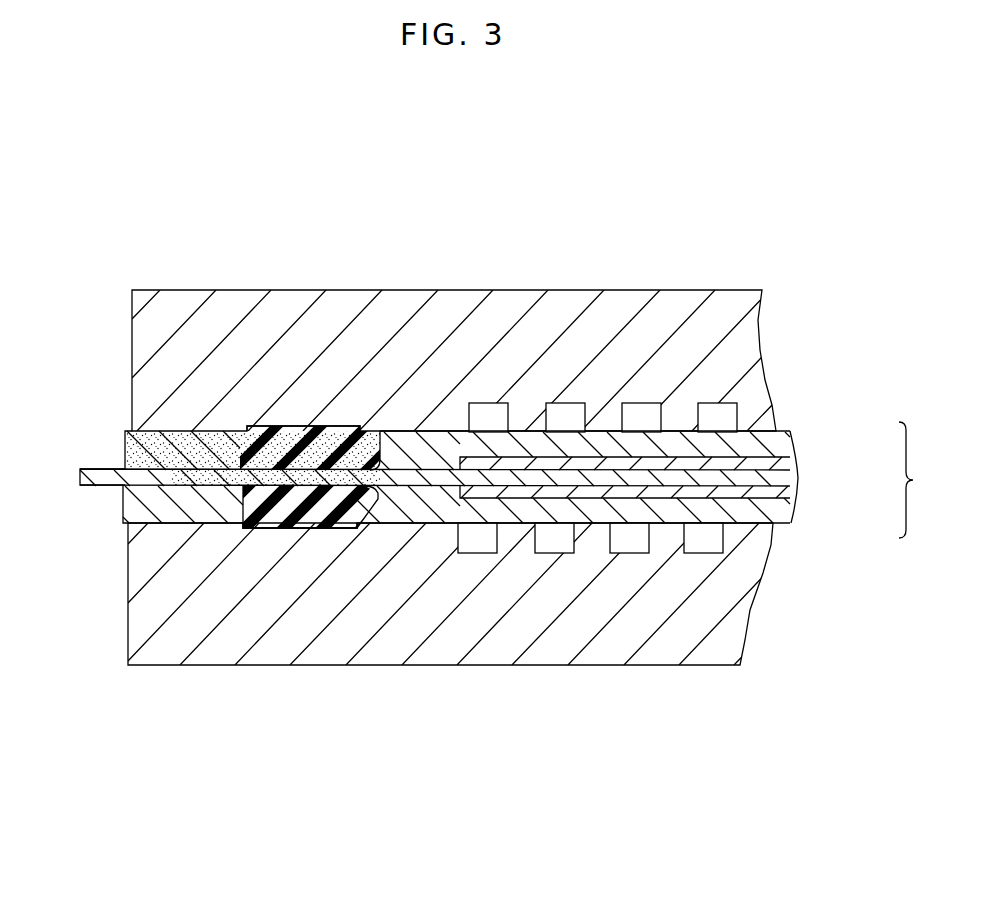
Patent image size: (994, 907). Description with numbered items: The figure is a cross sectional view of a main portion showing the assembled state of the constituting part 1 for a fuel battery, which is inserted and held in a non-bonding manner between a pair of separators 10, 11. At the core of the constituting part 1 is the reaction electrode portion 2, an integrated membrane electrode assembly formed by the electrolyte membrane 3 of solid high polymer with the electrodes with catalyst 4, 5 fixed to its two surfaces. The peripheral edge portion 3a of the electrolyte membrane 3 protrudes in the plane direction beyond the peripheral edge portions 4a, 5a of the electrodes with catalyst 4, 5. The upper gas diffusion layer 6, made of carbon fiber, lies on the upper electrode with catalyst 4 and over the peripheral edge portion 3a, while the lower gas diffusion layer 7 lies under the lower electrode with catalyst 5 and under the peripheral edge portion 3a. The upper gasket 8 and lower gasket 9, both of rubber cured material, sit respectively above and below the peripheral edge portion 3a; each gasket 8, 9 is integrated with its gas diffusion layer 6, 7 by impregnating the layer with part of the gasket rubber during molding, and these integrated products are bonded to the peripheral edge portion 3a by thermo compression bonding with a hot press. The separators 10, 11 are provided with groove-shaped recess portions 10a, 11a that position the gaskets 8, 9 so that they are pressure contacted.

The constituting part for a fuel battery 1 is at (788, 428).
The reaction electrode portion 2 is at (862, 480).
The electrolyte membrane 3 is at (788, 475).
The peripheral edge portion of the electrolyte membrane 3a is at (165, 462).
The electrode with catalyst 4 is at (793, 463).
The peripheral edge portion of the electrode with catalyst 4a is at (483, 462).
The electrode with catalyst 5 is at (793, 495).
The peripheral edge portion of the electrode with catalyst 5a is at (483, 490).
The gas diffusion layer 6 is at (435, 447).
The gas diffusion layer 7 is at (437, 497).
The gasket 8 is at (320, 435).
The gasket 9 is at (312, 507).
The separator 10 is at (667, 320).
The groove-shaped recess portion 10a is at (247, 427).
The separator 11 is at (650, 607).
The groove-shaped recess portion 11a is at (240, 505).